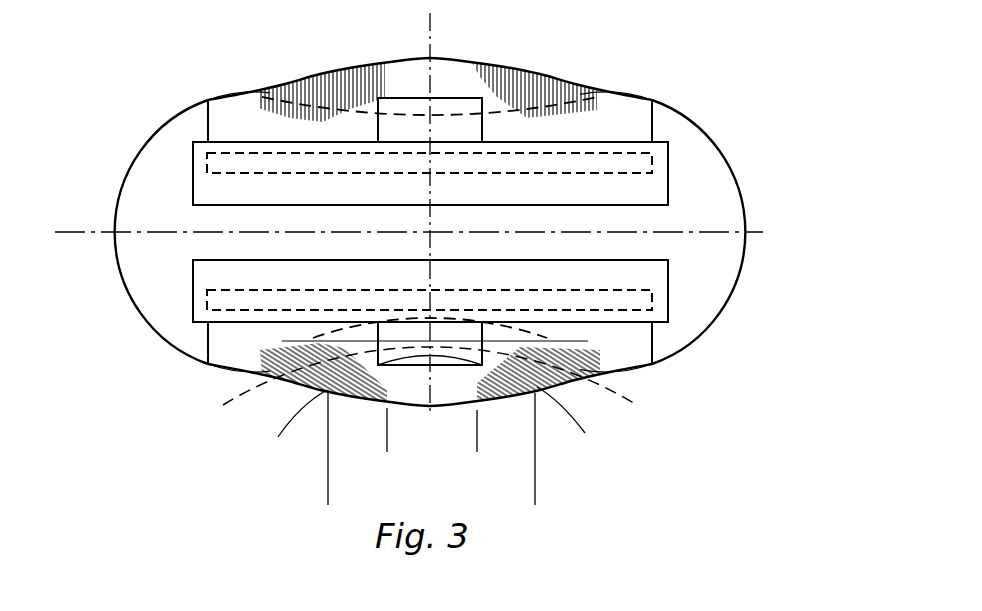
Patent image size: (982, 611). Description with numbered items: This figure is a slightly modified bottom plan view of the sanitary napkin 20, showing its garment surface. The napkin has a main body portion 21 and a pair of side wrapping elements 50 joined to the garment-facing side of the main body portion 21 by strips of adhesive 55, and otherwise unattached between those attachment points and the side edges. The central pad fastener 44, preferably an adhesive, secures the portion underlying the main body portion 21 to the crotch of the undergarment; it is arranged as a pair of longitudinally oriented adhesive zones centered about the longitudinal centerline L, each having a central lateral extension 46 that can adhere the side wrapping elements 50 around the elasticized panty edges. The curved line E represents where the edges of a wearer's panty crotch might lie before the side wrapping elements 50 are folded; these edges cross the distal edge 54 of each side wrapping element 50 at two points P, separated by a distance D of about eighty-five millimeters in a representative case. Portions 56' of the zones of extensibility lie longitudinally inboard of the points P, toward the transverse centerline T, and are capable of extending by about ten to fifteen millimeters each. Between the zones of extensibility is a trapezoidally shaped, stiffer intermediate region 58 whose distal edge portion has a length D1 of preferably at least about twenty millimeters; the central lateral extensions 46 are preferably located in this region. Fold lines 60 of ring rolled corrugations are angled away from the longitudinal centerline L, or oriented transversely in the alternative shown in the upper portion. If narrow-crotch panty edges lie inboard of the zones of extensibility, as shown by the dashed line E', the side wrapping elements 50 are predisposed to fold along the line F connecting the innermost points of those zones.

The sanitary napkin 20 is at (671, 80).
The main body portion 21 is at (709, 213).
The central pad fastener 44 is at (202, 190).
The central lateral extension 46 is at (393, 107).
The side wrapping element 50 is at (557, 69).
The distal edge 54 is at (362, 393).
The portion of the zone of extensibility 56' is at (533, 416).
The strip of adhesive 55 is at (643, 158).
The intermediate region 58 is at (417, 65).
The fold line 60 is at (270, 370).
The longitudinal centerline L is at (73, 232).
The transverse centerline T is at (430, 25).
The fold line F is at (588, 341).
The panty edge line E is at (449, 437).
The narrow panty edge line E' is at (452, 404).
The crossing point P is at (328, 390).
The distance between points P D is at (534, 491).
The length of the distal edge portion D1 is at (388, 442).